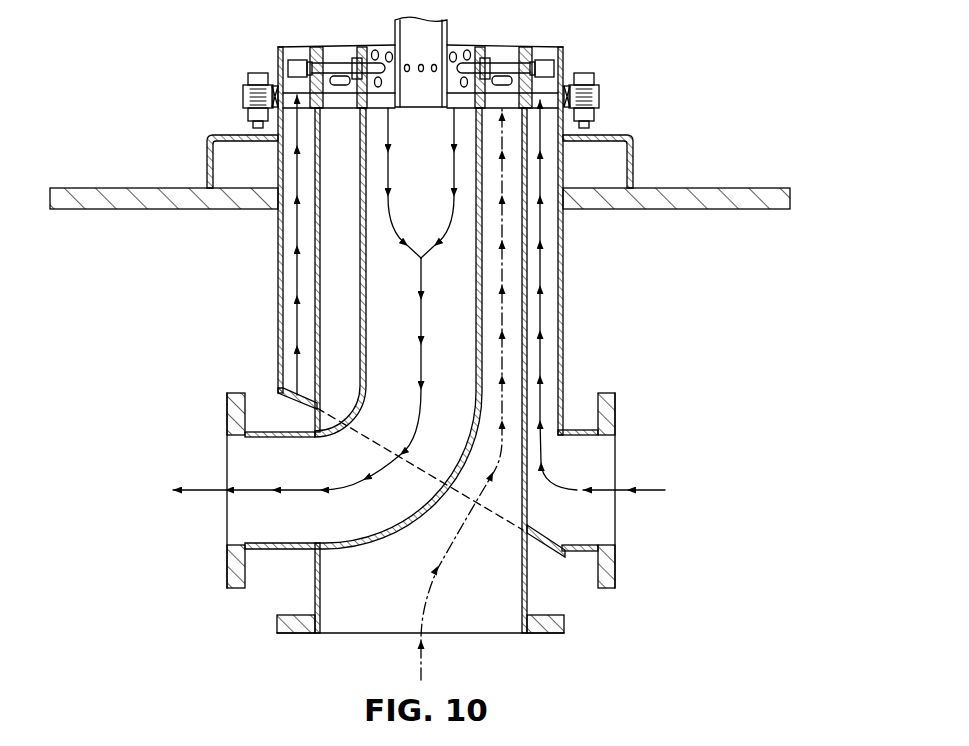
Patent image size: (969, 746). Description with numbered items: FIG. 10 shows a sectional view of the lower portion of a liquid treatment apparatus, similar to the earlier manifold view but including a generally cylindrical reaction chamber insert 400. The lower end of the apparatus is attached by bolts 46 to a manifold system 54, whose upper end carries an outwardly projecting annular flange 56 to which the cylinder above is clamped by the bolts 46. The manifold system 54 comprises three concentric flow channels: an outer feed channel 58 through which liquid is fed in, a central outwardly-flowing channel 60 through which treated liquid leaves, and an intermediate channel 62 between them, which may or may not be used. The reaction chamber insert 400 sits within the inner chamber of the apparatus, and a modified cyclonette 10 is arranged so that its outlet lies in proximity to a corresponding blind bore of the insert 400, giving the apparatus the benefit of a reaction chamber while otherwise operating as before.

The modified cyclonette 10 is at (334, 58).
The reaction chamber insert 400 is at (392, 45).
The bolts 46 is at (584, 72).
The annular flange 56 is at (243, 100).
The intermediate channel 62 is at (355, 247).
The central outwardly-flowing channel 60 is at (411, 304).
The outer feed channel 58 is at (563, 297).
The manifold system 54 is at (165, 348).